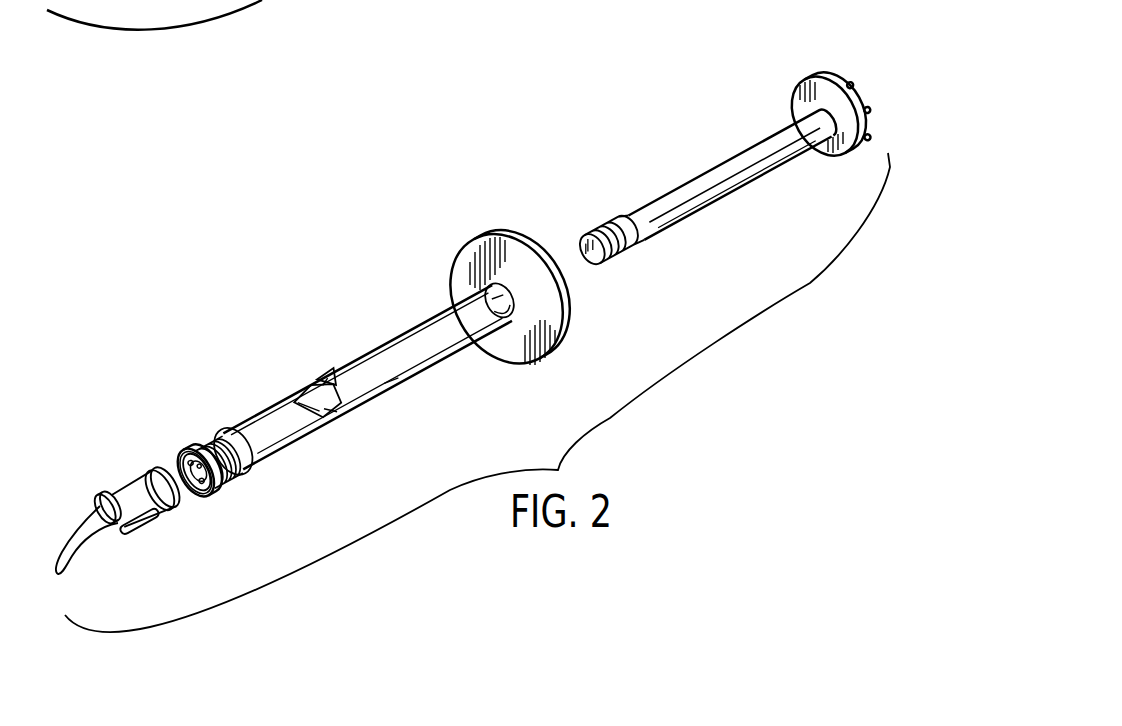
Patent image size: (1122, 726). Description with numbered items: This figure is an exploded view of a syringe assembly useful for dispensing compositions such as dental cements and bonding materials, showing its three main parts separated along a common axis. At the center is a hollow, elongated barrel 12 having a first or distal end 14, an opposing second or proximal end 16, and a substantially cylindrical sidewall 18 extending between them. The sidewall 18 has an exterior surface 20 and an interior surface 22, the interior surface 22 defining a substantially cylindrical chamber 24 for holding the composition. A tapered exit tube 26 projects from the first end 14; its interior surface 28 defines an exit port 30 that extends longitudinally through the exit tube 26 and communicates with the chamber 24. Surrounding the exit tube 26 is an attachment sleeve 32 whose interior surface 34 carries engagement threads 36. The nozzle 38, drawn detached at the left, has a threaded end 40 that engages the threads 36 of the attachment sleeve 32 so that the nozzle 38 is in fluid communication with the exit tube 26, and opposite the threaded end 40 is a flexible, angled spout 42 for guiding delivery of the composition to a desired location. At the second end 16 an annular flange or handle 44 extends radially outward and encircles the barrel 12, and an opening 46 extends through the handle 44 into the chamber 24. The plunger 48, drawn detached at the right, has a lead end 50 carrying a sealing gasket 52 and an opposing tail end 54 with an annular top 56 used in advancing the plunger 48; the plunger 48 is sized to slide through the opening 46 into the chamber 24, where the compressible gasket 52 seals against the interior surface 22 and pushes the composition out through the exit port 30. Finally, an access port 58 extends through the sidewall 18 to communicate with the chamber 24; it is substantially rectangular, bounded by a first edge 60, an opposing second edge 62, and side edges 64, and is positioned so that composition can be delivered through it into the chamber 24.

The barrel 12 is at (363, 350).
The first end 14 is at (240, 424).
The second end 16 is at (487, 292).
The sidewall 18 is at (427, 348).
The exterior surface 20 is at (272, 434).
The interior surface 22 is at (328, 404).
The chamber 24 is at (333, 382).
The exit tube 26 is at (203, 500).
The interior surface 28 is at (176, 452).
The exit port 30 is at (180, 467).
The attachment sleeve 32 is at (238, 490).
The interior surface 34 is at (212, 490).
The engagement threads 36 is at (195, 452).
The nozzle 38 is at (112, 505).
The threaded end 40 is at (160, 477).
The spout 42 is at (70, 553).
The handle 44 is at (547, 320).
The opening 46 is at (491, 312).
The plunger 48 is at (693, 177).
The lead end 50 is at (628, 220).
The sealing gasket 52 is at (593, 268).
The tail end 54 is at (795, 130).
The annular top 56 is at (837, 72).
The access port 58 is at (330, 412).
The first edge 60 is at (292, 407).
The second edge 62 is at (393, 383).
The side edges 64 is at (315, 382).